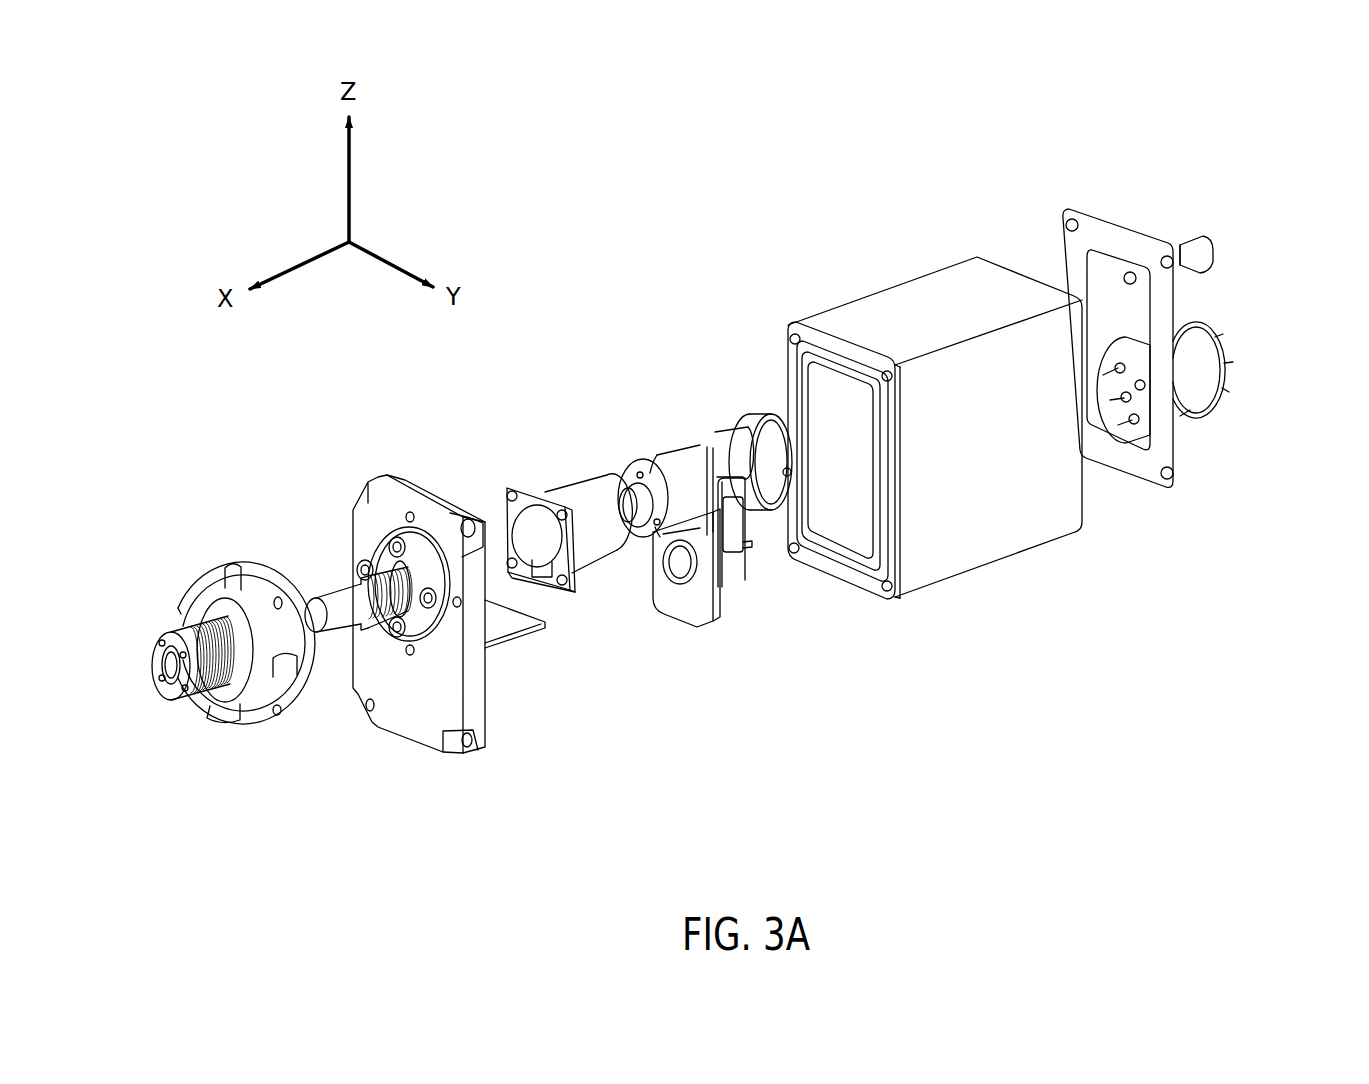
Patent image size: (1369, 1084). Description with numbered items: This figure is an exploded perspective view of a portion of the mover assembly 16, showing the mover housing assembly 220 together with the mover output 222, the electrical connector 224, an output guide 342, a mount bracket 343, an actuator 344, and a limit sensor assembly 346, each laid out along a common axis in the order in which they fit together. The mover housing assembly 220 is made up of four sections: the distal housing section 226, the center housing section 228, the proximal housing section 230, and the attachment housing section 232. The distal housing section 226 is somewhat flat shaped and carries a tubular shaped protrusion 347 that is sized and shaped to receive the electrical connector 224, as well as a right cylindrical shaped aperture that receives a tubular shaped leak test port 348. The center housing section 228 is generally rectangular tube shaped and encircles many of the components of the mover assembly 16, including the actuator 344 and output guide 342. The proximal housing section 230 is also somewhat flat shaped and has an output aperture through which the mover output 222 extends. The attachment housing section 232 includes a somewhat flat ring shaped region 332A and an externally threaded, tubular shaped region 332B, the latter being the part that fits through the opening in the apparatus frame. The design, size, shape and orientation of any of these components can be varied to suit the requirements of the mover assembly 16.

The mover assembly 16 is at (935, 334).
The mover housing assembly 220 is at (835, 318).
The mover output 222 is at (321, 584).
The electrical connector 224 is at (1208, 323).
The distal housing section 226 is at (1122, 220).
The center housing section 228 is at (920, 305).
The proximal housing section 230 is at (400, 496).
The attachment housing section 232 is at (203, 562).
The ring shaped region 332A is at (192, 593).
The tubular shaped region 332B is at (237, 662).
The output guide 342 is at (663, 468).
The mount bracket 343 is at (592, 490).
The actuator 344 is at (720, 437).
The limit sensor assembly 346 is at (513, 635).
The tubular shaped protrusion 347 is at (1203, 405).
The leak test port 348 is at (1200, 262).